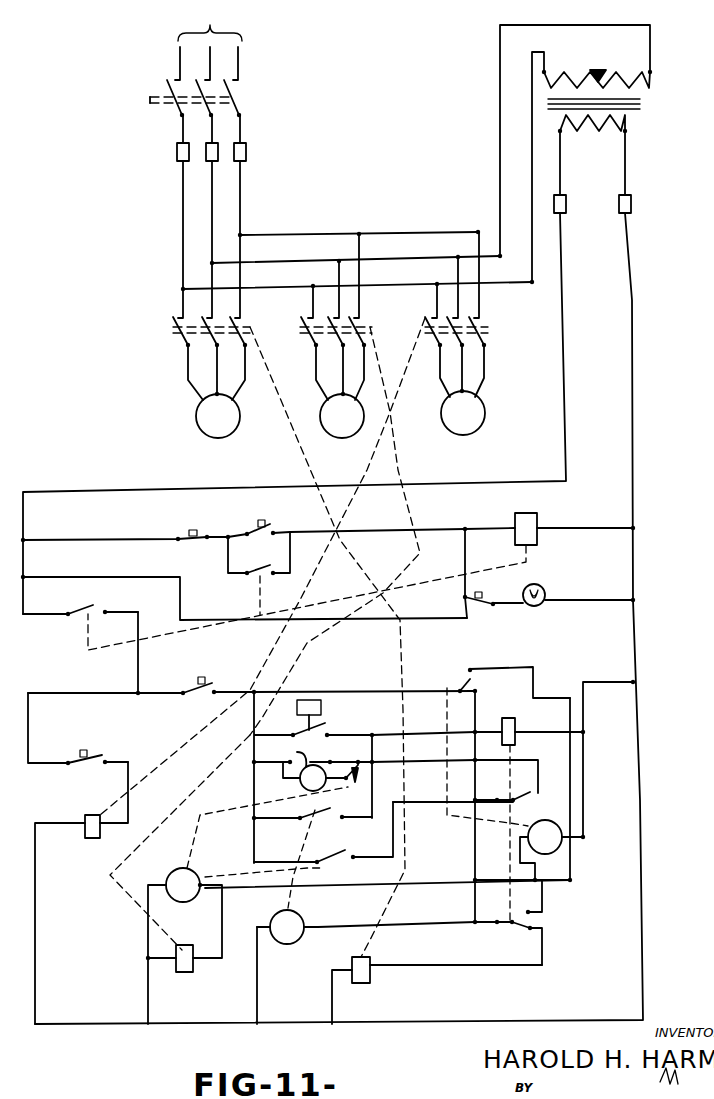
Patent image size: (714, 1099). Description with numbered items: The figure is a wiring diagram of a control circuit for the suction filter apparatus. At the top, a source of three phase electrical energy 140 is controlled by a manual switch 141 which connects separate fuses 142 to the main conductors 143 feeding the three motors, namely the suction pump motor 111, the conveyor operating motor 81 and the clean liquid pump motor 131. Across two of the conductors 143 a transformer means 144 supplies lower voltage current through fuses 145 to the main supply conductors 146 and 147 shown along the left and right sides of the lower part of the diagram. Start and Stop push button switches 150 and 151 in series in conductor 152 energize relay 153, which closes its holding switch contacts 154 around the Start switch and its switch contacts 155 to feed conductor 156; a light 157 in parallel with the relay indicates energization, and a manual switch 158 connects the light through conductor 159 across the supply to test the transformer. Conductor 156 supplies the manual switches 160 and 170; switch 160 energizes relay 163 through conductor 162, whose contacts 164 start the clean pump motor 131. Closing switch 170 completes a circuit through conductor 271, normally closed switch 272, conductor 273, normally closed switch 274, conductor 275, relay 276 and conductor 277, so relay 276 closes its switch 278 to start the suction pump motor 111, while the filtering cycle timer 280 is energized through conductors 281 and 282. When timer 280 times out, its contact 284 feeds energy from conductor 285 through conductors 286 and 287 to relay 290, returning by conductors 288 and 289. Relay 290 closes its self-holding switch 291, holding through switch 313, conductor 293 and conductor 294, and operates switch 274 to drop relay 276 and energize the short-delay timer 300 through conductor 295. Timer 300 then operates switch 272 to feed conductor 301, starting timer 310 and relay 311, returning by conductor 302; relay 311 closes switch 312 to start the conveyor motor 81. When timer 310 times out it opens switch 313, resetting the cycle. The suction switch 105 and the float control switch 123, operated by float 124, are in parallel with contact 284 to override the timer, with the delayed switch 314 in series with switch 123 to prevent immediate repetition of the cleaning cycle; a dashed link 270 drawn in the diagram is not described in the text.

The source of three phase electrical energy 140 is at (208, 42).
The switch 141 is at (145, 105).
The fuses 142 is at (245, 146).
The main conductors 143 is at (278, 288).
The transformer means 144 is at (645, 105).
The fuses 145 is at (622, 198).
The main supply conductor 146 is at (566, 300).
The main supply conductor 147 is at (633, 340).
The Start push button switch 150 is at (272, 530).
The Stop push button switch 151 is at (196, 543).
The conductor 152 is at (428, 530).
The relay 153 is at (537, 520).
The holding switch contacts 154 is at (270, 563).
The switch contacts 155 is at (98, 601).
The conductor 156 is at (140, 657).
The light 157 is at (540, 584).
The manual switch 158 is at (482, 607).
The conductor 159 is at (385, 620).
The manual switch 160 is at (105, 755).
The conductor 162 is at (128, 800).
The relay 163 is at (93, 838).
The contacts 164 is at (488, 327).
The manual switch 170 is at (210, 682).
The suction pump motor 111 is at (196, 416).
The conveyor operating motor 81 is at (320, 414).
The clean liquid pump motor 131 is at (441, 412).
The switch 278 is at (250, 327).
The switch 312 is at (372, 327).
The suction switch 105 is at (320, 725).
The float control switch 123 is at (293, 750).
The float 124 is at (295, 787).
The switch 314 is at (350, 786).
The mechanical link 270 is at (487, 757).
The conductor 271 is at (325, 690).
The switch 272 is at (472, 684).
The conductor 273 is at (475, 851).
The switch 274 is at (512, 928).
The conductor 275 is at (448, 967).
The relay 276 is at (360, 983).
The conductor 277 is at (330, 1005).
The filtering cycle timer 280 is at (304, 922).
The conductor 281 is at (385, 928).
The conductor 282 is at (257, 990).
The contact 284 is at (310, 826).
The conductor 285 is at (250, 765).
The conductor 286 is at (372, 752).
The conductor 287 is at (405, 731).
The conductor 288 is at (517, 740).
The conductor 289 is at (583, 712).
The relay 290 is at (512, 722).
The self-holding switch 291 is at (518, 803).
The conductor 293 is at (393, 832).
The conductor 294 is at (462, 770).
The conductor 295 is at (542, 898).
The timer 300 is at (558, 848).
The conductor 301 is at (533, 667).
The conductor 302 is at (148, 995).
The timer 310 is at (193, 872).
The relay 311 is at (185, 972).
The switch 313 is at (315, 853).